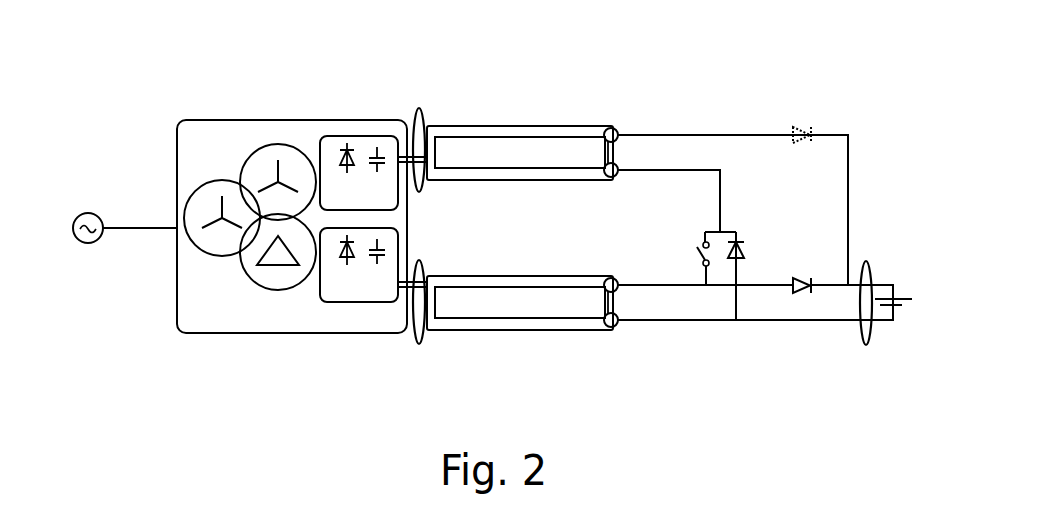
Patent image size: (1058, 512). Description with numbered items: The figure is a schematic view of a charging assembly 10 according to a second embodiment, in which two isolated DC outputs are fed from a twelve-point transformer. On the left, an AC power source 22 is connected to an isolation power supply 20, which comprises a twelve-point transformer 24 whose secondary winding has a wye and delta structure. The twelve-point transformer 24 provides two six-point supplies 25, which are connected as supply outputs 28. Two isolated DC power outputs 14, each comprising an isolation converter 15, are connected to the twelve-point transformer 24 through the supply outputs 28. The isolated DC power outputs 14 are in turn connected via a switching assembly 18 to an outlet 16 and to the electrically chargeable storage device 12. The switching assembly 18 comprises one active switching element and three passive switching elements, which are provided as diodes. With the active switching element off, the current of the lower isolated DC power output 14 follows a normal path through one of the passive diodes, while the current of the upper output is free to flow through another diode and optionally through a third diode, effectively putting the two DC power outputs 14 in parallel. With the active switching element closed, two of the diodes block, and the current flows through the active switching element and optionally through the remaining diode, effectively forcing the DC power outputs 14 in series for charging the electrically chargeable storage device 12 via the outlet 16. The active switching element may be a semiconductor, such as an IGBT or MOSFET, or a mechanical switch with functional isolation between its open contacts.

The charging assembly 10 is at (695, 100).
The electrically chargeable storage device 12 is at (903, 306).
The isolated DC power output 14 is at (522, 225).
The isolation converter 15 is at (471, 136).
The outlet 16 is at (865, 345).
The switching assembly 18 is at (767, 135).
The isolation power supply 20 is at (255, 100).
The AC power source 22 is at (86, 243).
The twelve-point transformer 24 is at (250, 263).
The six-point supply 25 is at (350, 136).
The supply output 28 is at (420, 108).